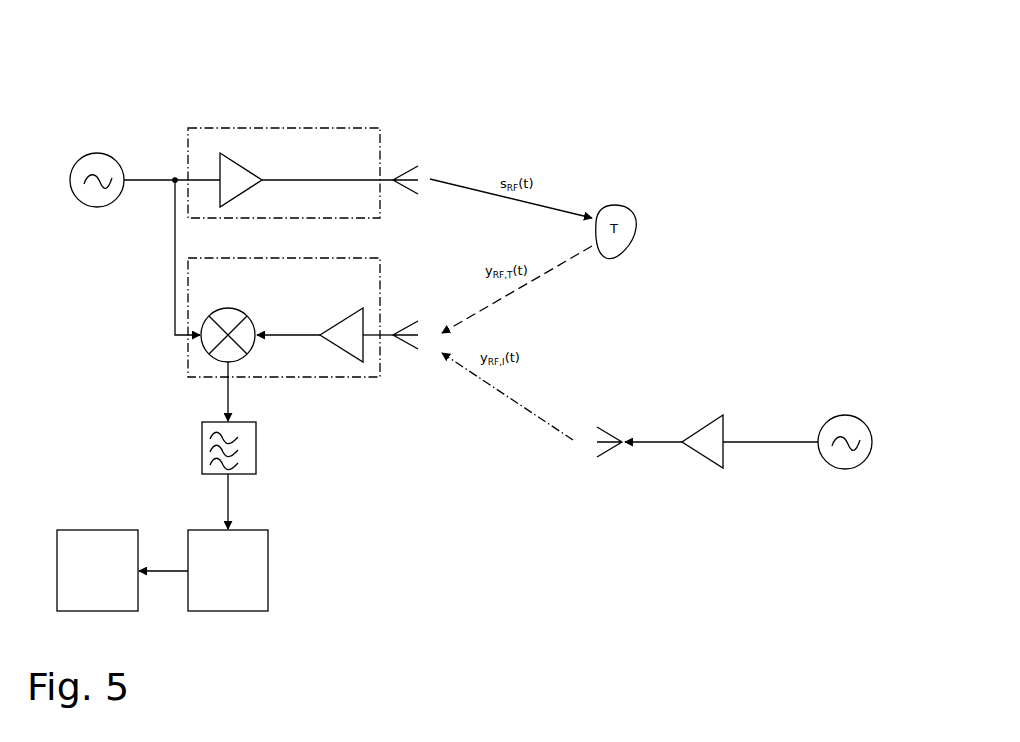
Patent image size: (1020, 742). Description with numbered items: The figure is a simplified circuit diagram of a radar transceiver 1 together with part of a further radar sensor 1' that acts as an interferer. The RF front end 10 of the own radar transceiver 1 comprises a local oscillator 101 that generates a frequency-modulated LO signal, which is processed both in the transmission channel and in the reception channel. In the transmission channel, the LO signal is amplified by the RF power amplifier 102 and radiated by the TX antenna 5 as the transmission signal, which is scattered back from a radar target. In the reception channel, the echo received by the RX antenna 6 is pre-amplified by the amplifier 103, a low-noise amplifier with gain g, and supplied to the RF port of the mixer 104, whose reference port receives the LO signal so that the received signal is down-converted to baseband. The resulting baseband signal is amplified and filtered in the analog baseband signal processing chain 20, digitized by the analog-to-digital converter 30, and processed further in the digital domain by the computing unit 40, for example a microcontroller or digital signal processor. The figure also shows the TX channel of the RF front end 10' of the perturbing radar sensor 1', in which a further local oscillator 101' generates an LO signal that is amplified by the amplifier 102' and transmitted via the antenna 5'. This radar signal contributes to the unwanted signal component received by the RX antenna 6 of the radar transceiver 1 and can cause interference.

The radar transceiver 1 is at (121, 44).
The RF front end 10 is at (200, 248).
The local oscillator 101 is at (97, 164).
The RF power amplifier 102 is at (306, 172).
The TX antenna 5 is at (405, 161).
The RX antenna 6 is at (399, 318).
The amplifier 103 is at (341, 311).
The mixer 104 is at (239, 309).
The analog baseband signal processing chain 20 is at (256, 450).
The analog-to-digital converter 30 is at (203, 570).
The computing unit 40 is at (97, 570).
The RF front end 10' is at (758, 370).
The radar sensor 1' is at (825, 335).
The antenna 5' is at (639, 421).
The amplifier 102' is at (705, 422).
The further local oscillator 101' is at (847, 422).